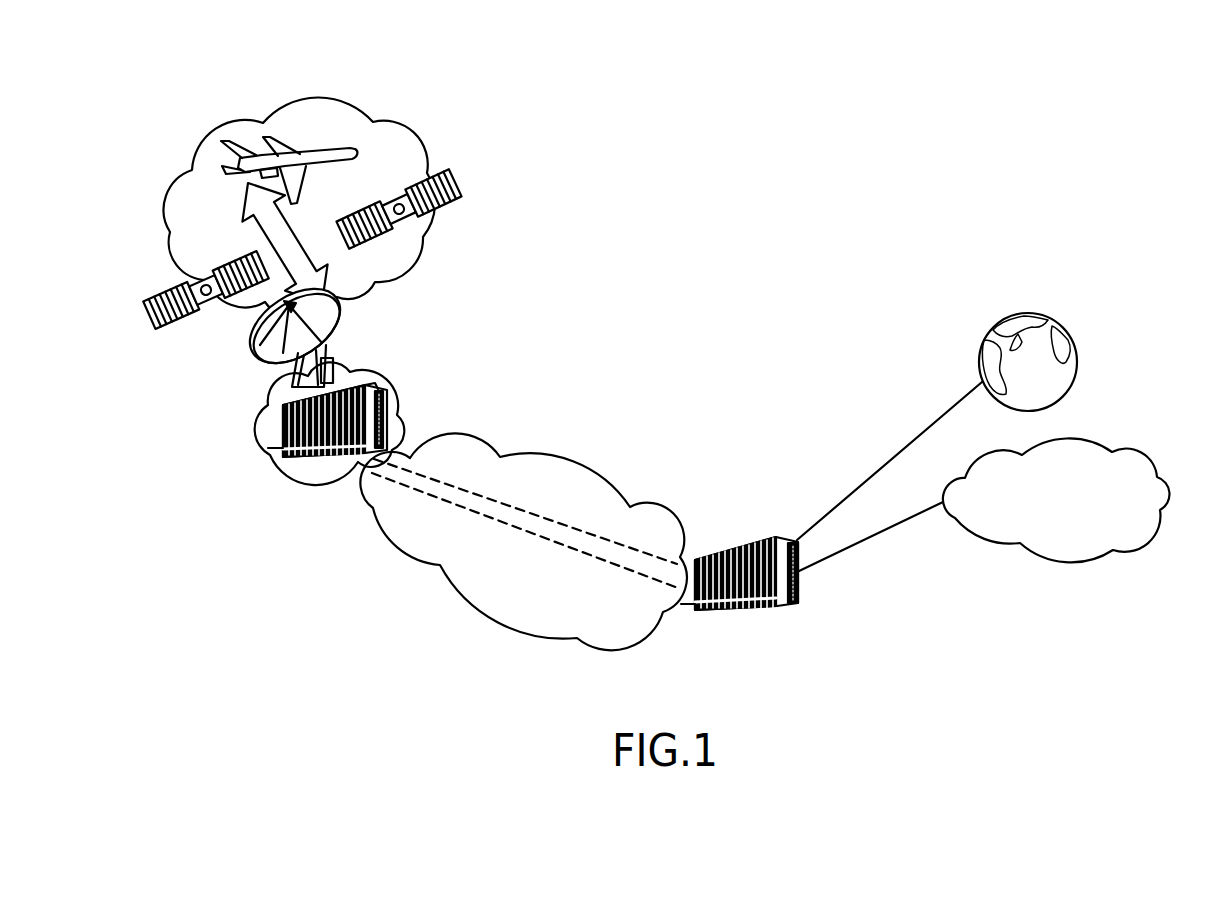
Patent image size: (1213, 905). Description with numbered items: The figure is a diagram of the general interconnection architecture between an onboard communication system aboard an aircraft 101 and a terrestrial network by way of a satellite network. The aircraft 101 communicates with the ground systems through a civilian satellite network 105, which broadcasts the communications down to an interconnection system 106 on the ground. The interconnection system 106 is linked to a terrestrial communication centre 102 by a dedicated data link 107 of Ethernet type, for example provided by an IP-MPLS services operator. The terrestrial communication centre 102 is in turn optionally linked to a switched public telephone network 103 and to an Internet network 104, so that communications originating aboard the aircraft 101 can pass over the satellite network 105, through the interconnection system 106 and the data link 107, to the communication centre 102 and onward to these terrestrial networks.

The aircraft 101 is at (268, 168).
The terrestrial communication centre 102 is at (743, 544).
The switched public telephone network 103 is at (1112, 445).
The Internet network 104 is at (1047, 320).
The civilian satellite network 105 is at (152, 288).
The interconnection system 106 is at (265, 412).
The dedicated data link 107 is at (542, 484).